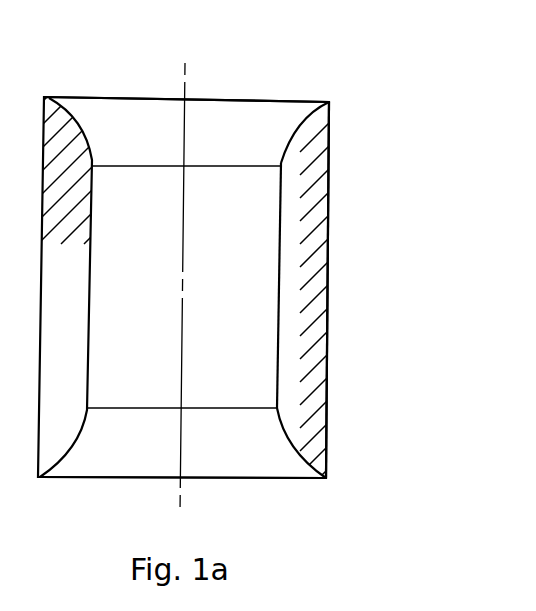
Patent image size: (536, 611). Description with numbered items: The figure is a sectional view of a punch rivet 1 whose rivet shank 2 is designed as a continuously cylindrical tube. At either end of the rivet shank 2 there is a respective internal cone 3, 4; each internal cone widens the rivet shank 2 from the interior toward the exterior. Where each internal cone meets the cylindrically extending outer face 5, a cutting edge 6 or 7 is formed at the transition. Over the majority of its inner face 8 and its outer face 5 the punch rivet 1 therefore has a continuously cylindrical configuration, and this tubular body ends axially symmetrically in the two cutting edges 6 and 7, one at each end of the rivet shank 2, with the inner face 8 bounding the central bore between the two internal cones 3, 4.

The punch rivet 1 is at (418, 188).
The rivet shank 2 is at (307, 347).
The internal cone 3 is at (305, 125).
The internal cone 4 is at (298, 452).
The outer face 5 is at (328, 272).
The cutting edge 6 is at (327, 478).
The cutting edge 7 is at (329, 102).
The inner face 8 is at (92, 213).